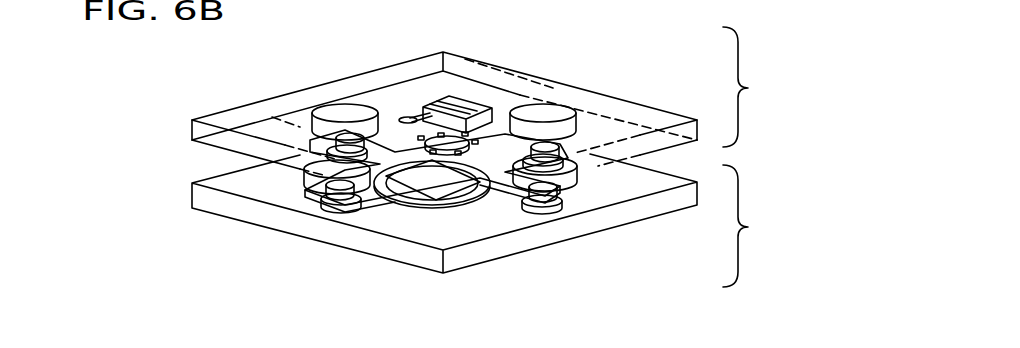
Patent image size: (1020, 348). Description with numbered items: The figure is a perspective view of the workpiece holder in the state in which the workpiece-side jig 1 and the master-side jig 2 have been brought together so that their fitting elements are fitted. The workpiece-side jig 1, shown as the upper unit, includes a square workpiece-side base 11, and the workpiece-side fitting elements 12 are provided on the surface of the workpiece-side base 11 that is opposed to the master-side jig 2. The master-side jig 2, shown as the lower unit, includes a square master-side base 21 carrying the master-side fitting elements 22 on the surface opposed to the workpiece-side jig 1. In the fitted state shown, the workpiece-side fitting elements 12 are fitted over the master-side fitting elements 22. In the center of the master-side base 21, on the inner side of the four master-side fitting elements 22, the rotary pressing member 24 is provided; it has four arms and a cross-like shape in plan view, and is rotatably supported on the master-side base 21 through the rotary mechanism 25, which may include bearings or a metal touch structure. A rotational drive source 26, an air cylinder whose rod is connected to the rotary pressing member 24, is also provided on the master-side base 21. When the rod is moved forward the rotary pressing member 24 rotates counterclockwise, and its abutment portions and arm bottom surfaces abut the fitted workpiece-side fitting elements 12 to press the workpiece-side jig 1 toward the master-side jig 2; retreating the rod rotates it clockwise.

The workpiece-side jig 1 is at (744, 87).
The master-side jig 2 is at (746, 226).
The workpiece-side base 11 is at (191, 128).
The workpiece-side fitting elements 12 is at (330, 111).
The master-side base 21 is at (190, 197).
The master-side fitting elements 22 is at (323, 147).
The rotary pressing member 24 is at (465, 173).
The rotary mechanism 25 is at (412, 197).
The rotational drive source 26 is at (437, 100).